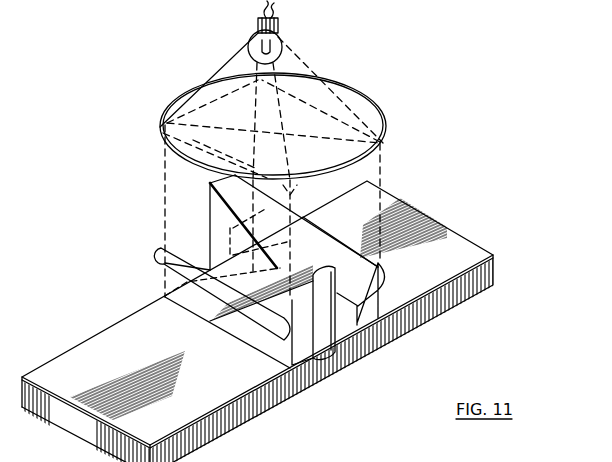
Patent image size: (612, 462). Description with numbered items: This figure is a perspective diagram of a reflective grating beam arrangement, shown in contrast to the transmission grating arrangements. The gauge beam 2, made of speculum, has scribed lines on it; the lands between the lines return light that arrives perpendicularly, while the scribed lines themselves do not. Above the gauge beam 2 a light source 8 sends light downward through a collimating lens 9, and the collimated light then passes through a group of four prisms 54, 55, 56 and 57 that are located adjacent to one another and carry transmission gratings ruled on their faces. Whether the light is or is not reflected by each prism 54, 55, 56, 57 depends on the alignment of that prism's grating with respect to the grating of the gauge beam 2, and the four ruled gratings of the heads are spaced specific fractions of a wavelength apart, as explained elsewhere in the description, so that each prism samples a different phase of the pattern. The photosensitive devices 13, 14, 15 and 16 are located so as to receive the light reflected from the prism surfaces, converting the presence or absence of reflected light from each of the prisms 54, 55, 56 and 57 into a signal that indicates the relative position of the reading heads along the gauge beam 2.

The gauge beam 2 is at (201, 405).
The source 8 is at (283, 43).
The collimating lens 9 is at (387, 120).
The photosensitive device 13 is at (157, 257).
The photosensitive device 14 is at (340, 356).
The photosensitive device 15 is at (208, 183).
The photosensitive device 16 is at (389, 278).
The prism 54 is at (183, 297).
The prism 55 is at (217, 267).
The prism 56 is at (212, 190).
The prism 57 is at (329, 249).